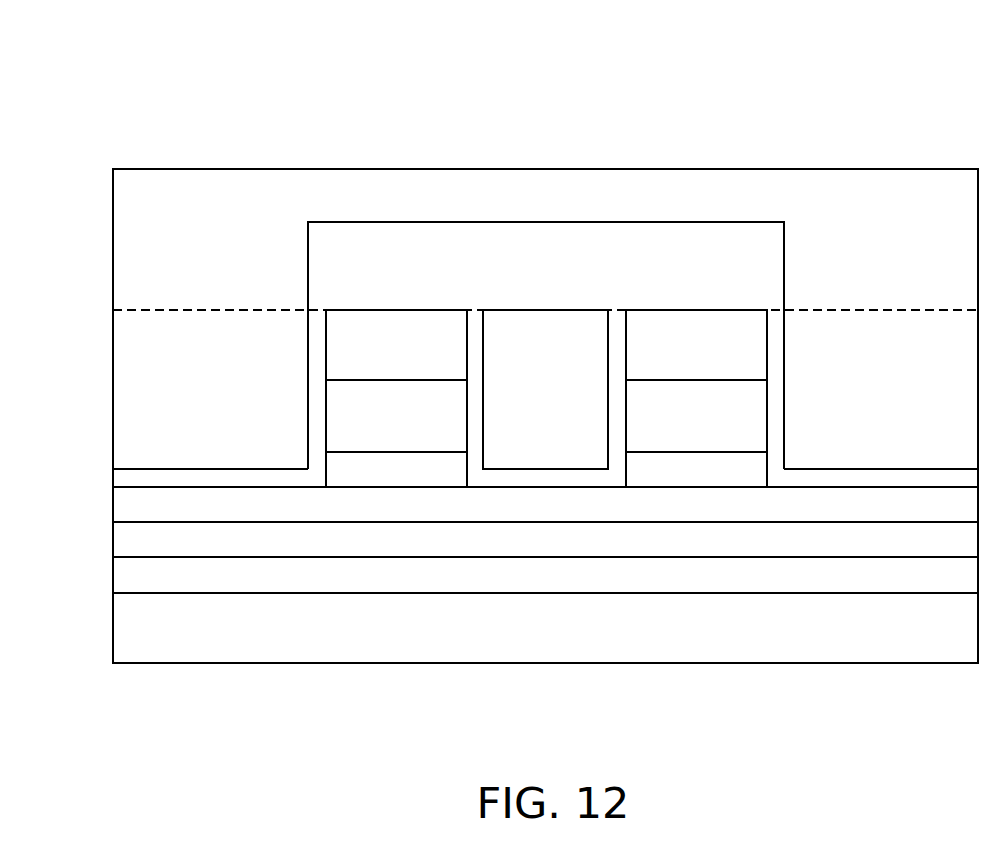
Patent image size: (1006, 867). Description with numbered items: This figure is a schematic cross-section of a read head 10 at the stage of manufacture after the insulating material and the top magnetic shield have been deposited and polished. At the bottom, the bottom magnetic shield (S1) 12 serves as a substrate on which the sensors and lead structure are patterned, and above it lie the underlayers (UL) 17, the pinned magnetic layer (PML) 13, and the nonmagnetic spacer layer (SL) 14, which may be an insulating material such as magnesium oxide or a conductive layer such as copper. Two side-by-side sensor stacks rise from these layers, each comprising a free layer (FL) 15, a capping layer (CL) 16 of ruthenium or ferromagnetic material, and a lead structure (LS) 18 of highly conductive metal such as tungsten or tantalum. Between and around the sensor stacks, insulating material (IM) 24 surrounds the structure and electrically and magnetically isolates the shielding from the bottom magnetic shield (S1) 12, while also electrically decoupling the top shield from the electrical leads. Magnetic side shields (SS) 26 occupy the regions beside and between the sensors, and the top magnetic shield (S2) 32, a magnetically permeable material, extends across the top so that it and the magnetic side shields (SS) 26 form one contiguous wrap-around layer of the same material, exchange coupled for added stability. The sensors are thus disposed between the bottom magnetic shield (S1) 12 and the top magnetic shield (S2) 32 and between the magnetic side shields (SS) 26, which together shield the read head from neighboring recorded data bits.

The read head 10 is at (437, 72).
The bottom magnetic shield (S1) 12 is at (455, 643).
The pinned magnetic layer (PML) 13 is at (455, 554).
The nonmagnetic spacer layer (SL) 14 is at (455, 518).
The free layer (FL) 15 is at (428, 481).
The capping layer (CL) 16 is at (428, 428).
The underlayers (UL) 17 is at (455, 589).
The lead structures (LS) 18 is at (428, 359).
The insulating material (IM) 24 is at (471, 271).
The magnetic side shield (SS) 26 is at (241, 376).
The top magnetic shield (S2) 32 is at (471, 214).